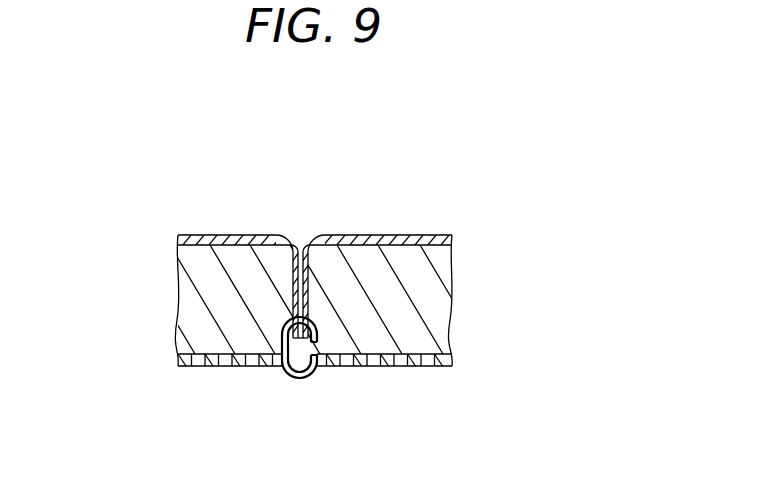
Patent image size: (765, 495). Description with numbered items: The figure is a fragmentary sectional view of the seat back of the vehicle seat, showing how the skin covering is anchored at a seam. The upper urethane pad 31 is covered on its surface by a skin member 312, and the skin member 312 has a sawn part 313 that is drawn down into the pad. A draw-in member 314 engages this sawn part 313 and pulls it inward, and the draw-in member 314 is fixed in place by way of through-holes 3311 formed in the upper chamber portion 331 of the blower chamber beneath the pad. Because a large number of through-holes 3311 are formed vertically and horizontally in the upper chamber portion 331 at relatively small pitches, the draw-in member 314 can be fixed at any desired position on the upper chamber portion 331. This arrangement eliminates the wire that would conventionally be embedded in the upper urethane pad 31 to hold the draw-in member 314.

The upper urethane pad 31 is at (437, 288).
The skin member 312 is at (425, 235).
The sawn part 313 is at (294, 288).
The draw-in member 314 is at (298, 380).
The upper chamber portion 331 is at (435, 367).
The through-holes 3311 is at (285, 350).